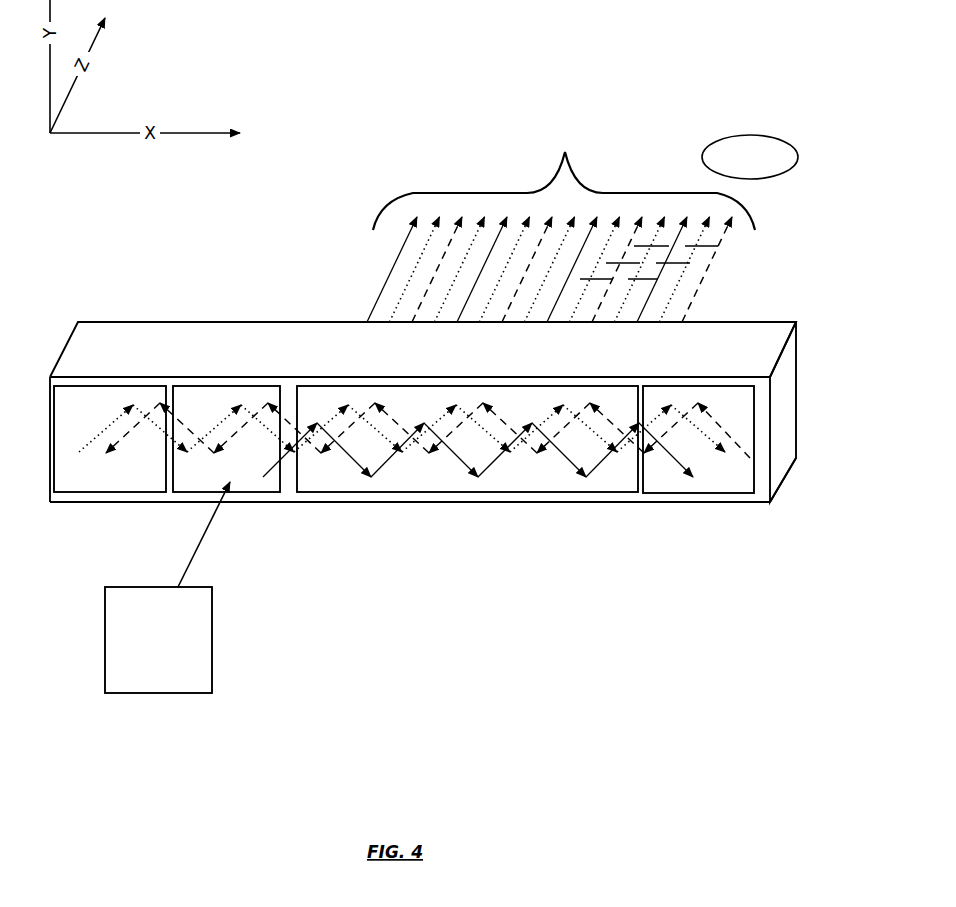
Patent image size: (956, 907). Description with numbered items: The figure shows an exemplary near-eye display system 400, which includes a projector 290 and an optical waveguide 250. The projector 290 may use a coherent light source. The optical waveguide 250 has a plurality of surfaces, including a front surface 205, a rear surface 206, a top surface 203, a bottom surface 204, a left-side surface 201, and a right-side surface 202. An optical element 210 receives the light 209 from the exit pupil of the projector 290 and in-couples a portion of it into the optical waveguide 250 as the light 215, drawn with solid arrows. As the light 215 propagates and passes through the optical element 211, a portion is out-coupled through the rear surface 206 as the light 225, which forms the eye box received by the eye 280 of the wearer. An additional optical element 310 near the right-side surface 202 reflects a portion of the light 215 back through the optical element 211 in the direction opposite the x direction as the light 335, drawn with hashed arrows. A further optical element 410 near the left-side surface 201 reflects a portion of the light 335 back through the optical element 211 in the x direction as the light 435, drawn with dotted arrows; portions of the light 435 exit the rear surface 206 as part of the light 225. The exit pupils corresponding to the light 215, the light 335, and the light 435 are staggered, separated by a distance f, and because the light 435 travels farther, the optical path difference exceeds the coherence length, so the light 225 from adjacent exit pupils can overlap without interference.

The left-side surface 201 is at (50, 377).
The right-side surface 202 is at (790, 350).
The top surface 203 is at (233, 340).
The bottom surface 204 is at (590, 502).
The front surface 205 is at (108, 497).
The rear surface 206 is at (155, 322).
The light 209 is at (212, 520).
The optical element 210 is at (226, 440).
The optical element 211 is at (467, 440).
The light 215 is at (398, 452).
The light 225 is at (561, 225).
The optical waveguide 250 is at (789, 494).
The eye 280 is at (750, 157).
The projector 290 is at (158, 640).
The optical element 310 is at (698, 440).
The light 335 is at (738, 447).
The near-eye display system 400 is at (445, 503).
The optical element 410 is at (110, 440).
The light 435 is at (518, 452).